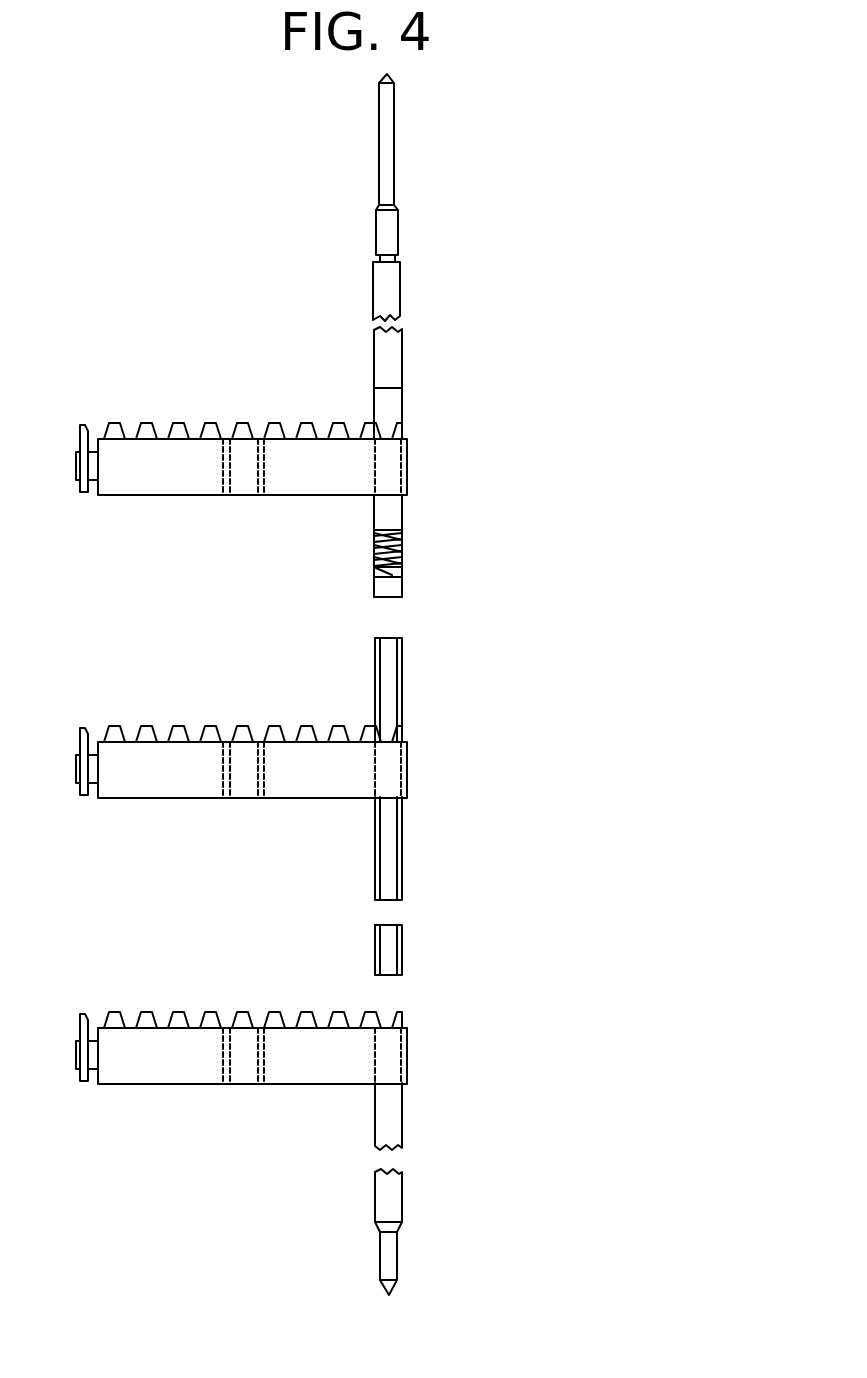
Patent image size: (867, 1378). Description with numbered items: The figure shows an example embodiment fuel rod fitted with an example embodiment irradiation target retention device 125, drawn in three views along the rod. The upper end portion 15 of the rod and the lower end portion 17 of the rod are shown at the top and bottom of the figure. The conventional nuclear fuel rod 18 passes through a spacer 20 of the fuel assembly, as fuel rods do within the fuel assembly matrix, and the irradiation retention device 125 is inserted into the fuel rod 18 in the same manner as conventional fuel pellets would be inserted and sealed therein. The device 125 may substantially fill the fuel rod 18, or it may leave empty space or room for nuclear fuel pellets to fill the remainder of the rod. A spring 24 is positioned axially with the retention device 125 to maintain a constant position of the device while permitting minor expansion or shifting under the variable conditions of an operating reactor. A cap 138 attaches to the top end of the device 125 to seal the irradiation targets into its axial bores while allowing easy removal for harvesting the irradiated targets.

The pin / probe tip 15 is at (379, 149).
The lower pin tip 17 is at (395, 1256).
The full-length fuel rod 18 is at (403, 653).
The spacer 20 is at (178, 481).
The spring 24 is at (377, 541).
The irradiation retention device 125 is at (390, 585).
The cap 138 is at (388, 571).